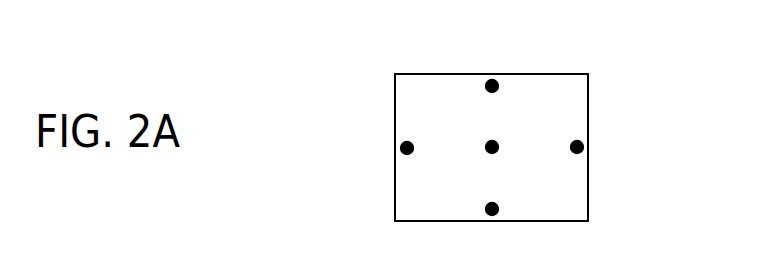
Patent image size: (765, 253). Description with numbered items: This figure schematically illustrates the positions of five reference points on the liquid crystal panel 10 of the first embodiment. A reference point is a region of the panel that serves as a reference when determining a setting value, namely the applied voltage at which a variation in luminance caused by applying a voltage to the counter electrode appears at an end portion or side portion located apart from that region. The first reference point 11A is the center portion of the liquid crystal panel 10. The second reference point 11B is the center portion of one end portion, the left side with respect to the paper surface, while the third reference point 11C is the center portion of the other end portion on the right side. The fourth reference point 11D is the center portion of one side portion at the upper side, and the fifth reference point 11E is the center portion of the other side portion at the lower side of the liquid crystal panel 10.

The liquid crystal panel 10 is at (589, 90).
The first reference point 11A is at (498, 147).
The second reference point 11B is at (402, 148).
The third reference point 11C is at (583, 147).
The fourth reference point 11D is at (492, 80).
The fifth reference point 11E is at (498, 206).